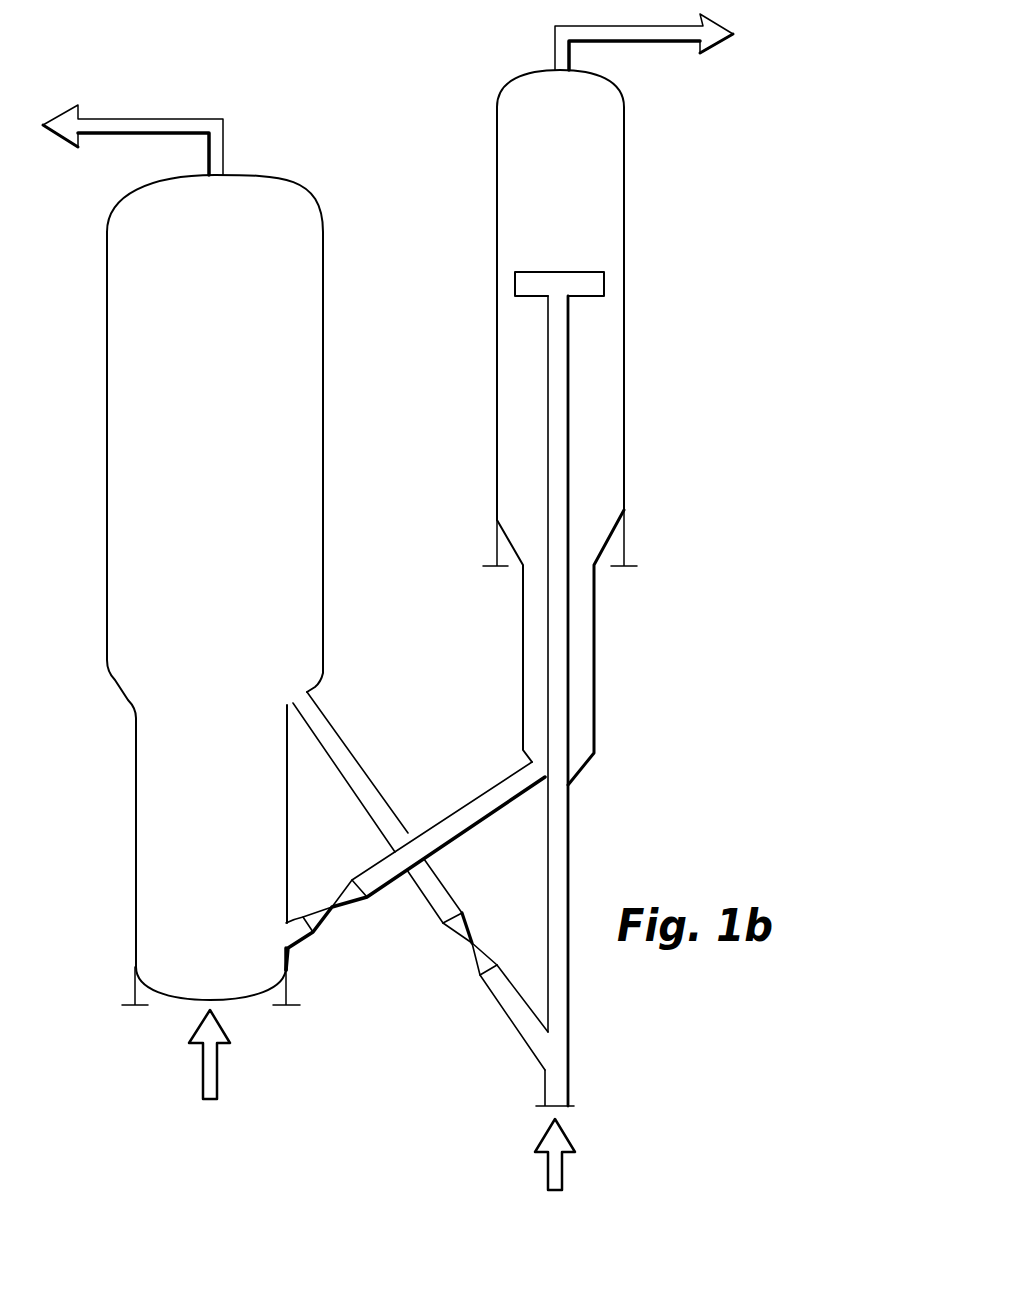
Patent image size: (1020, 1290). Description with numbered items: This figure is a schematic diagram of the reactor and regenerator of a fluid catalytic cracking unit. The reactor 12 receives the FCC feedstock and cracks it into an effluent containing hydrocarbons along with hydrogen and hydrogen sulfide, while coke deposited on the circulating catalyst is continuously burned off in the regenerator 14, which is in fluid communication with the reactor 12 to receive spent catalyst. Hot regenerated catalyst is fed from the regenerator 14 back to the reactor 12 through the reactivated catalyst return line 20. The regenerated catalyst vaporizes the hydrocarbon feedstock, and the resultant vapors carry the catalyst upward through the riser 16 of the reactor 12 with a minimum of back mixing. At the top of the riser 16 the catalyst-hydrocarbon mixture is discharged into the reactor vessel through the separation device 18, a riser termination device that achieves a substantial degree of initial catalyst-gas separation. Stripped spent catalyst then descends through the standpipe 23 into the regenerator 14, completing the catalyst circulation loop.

The reactor 12 is at (624, 178).
The regenerator 14 is at (323, 253).
The riser 16 is at (548, 403).
The separation device 18 is at (604, 280).
The reactivated catalyst return line 20 is at (363, 768).
The standpipe 23 is at (377, 887).